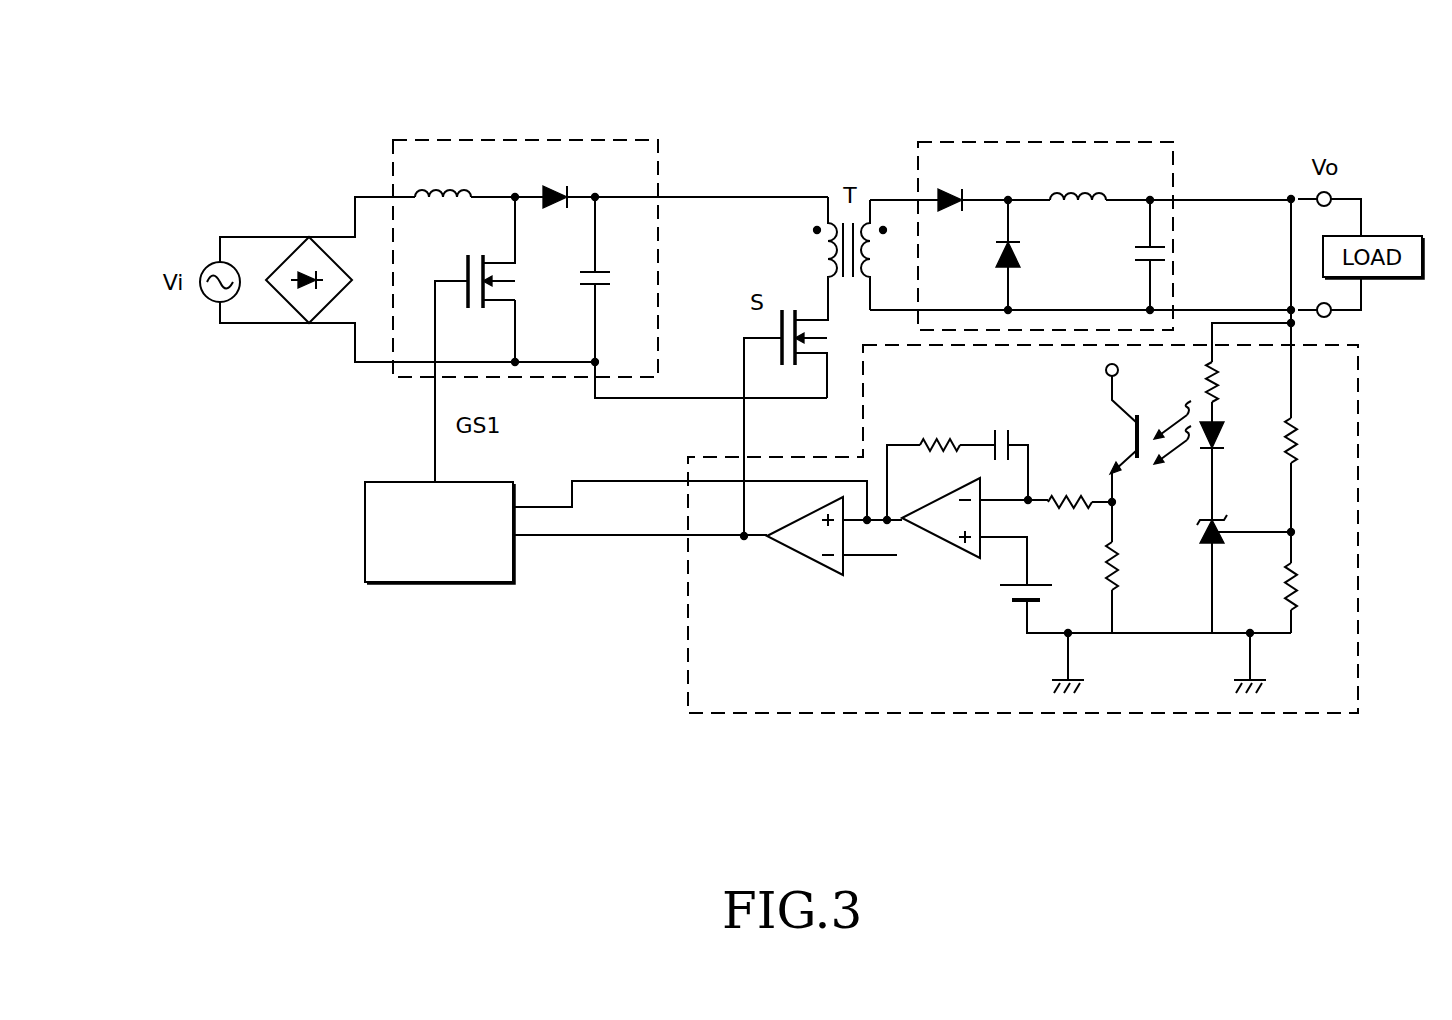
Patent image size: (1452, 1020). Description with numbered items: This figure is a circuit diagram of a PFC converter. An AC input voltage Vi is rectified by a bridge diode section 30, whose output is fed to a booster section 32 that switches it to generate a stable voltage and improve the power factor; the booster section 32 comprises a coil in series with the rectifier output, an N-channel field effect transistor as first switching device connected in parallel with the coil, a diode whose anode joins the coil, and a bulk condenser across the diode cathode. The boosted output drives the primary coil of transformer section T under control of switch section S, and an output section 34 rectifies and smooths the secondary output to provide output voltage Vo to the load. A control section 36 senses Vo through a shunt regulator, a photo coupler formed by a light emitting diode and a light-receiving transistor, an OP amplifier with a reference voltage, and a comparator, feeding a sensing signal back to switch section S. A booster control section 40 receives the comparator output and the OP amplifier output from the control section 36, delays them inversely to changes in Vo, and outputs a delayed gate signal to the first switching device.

The bridge diode section 30 is at (287, 258).
The booster section 32 is at (525, 140).
The output section 34 is at (1045, 142).
The control section 36 is at (978, 713).
The booster control section 40 is at (440, 583).